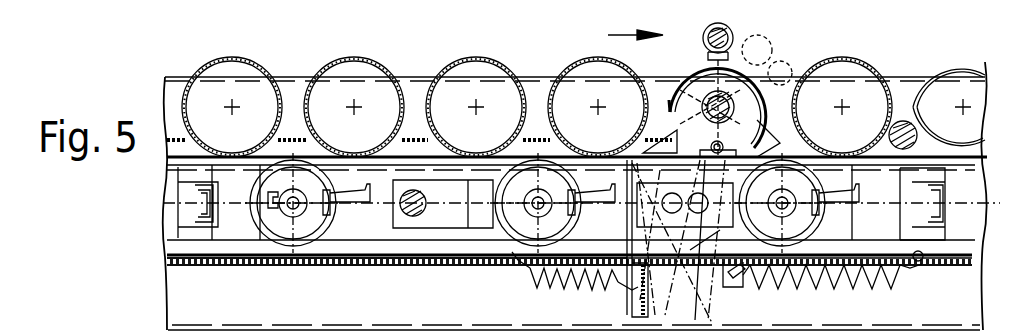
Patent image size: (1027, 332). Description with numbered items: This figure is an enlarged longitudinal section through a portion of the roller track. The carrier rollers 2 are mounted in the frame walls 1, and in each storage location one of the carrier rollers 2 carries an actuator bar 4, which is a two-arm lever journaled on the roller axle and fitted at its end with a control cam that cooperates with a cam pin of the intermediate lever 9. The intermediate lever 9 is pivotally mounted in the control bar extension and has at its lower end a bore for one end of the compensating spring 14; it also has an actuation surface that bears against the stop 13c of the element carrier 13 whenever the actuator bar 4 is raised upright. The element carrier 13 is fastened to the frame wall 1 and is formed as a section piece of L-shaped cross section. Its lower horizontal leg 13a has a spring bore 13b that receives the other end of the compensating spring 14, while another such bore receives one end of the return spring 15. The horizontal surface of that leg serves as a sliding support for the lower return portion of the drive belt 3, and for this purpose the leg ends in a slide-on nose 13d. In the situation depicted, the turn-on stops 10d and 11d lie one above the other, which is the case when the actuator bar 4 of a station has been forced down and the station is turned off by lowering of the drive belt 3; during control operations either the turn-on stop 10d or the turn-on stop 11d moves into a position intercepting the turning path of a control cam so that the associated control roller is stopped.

The frame wall 1 is at (416, 83).
The carrier roller 2 is at (528, 83).
The drive belt 3 is at (987, 256).
The actuator bar 4 is at (735, 36).
The intermediate lever 9 is at (716, 272).
The turn-on stop 10d is at (273, 213).
The turn-on stop 11d is at (268, 198).
The element carrier 13 is at (397, 243).
The lower horizontal leg 13a is at (345, 262).
The spring bore 13b is at (447, 262).
The stop 13c is at (632, 291).
The slide-on nose 13d is at (743, 282).
The compensating spring 14 is at (530, 277).
The return spring 15 is at (846, 282).